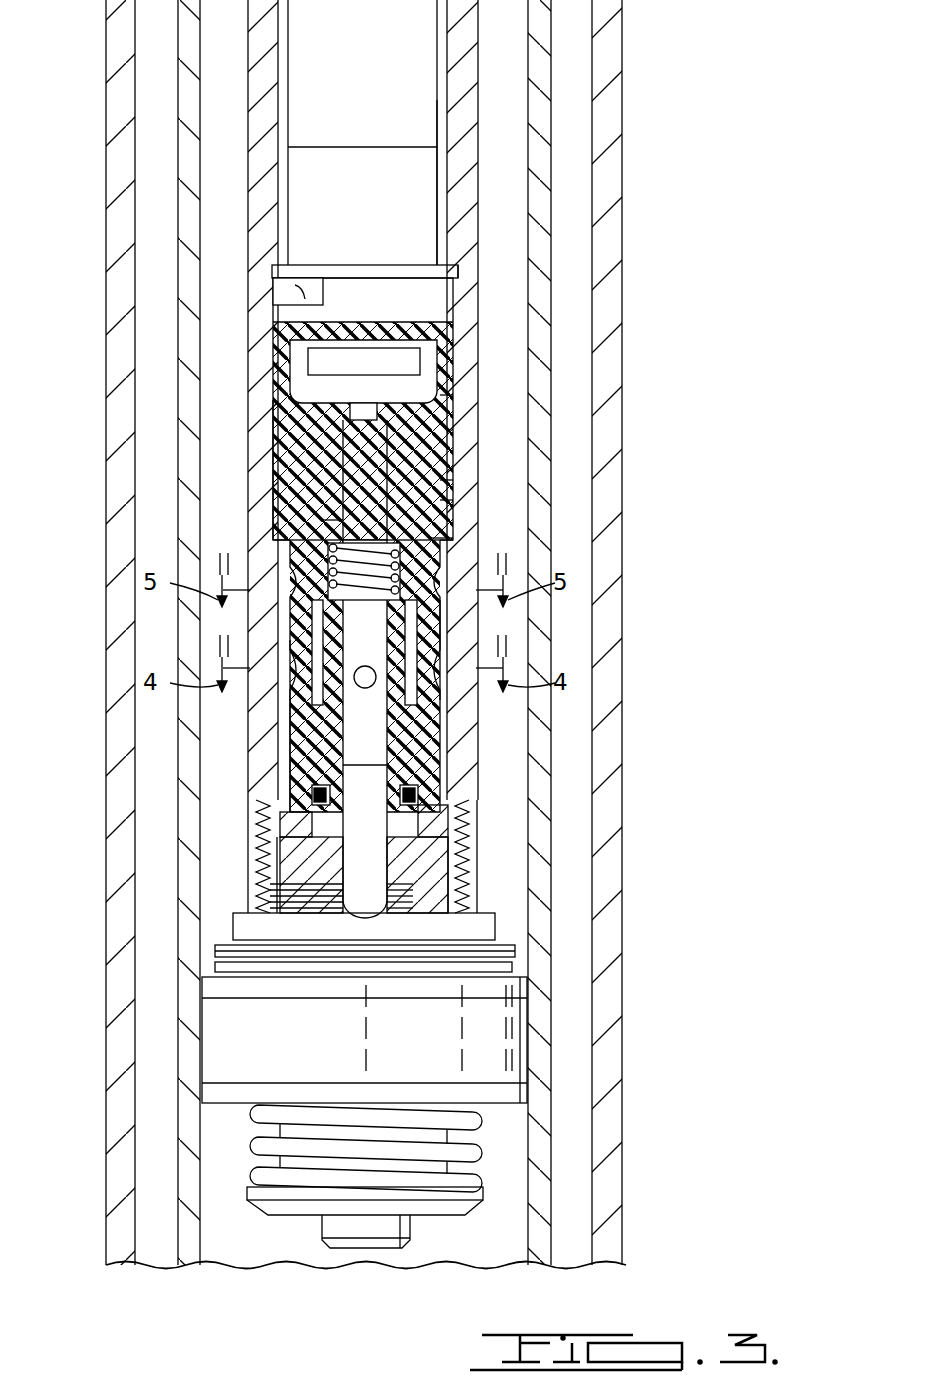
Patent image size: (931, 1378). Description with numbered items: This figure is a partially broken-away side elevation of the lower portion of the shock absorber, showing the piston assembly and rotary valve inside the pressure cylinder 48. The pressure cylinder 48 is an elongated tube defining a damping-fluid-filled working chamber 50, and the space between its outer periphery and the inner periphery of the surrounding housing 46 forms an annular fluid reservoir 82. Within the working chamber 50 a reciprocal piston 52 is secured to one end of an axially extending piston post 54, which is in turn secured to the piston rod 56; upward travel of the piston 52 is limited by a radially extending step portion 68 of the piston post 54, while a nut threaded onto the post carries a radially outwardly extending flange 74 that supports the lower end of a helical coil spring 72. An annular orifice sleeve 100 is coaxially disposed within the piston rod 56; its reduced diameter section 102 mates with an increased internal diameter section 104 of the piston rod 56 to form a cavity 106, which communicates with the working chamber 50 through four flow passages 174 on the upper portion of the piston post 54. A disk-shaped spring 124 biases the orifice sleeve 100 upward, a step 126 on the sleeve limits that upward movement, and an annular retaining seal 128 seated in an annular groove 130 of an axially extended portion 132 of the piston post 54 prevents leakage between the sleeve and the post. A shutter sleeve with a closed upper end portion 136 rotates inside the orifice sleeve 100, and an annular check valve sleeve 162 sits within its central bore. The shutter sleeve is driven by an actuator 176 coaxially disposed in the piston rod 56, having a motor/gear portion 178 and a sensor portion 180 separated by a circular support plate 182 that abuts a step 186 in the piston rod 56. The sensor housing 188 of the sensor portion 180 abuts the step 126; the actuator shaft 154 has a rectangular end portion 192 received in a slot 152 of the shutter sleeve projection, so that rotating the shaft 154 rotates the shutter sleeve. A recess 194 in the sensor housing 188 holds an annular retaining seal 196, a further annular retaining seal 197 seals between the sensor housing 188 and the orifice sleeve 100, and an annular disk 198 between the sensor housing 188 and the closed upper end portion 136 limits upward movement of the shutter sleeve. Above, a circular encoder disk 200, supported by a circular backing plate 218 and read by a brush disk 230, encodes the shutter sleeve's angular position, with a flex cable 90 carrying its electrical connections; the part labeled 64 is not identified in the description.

The housing 46 is at (612, 960).
The pressure cylinder 48 is at (540, 1030).
The working chamber 50 is at (510, 897).
The reciprocal piston 52 is at (513, 1050).
The piston post 54 is at (510, 1121).
The piston rod 56 is at (260, 147).
The end plate 64 is at (237, 925).
The step portion 68 is at (248, 920).
The helical coil spring 72 is at (525, 1172).
The flange 74 is at (485, 1205).
The annular fluid reservoir 82 is at (577, 912).
The flex cable 90 is at (323, 43).
The orifice sleeve 100 is at (435, 700).
The reduced diameter section 102 is at (300, 740).
The increased internal diameter section 104 is at (255, 705).
The cavity 106 is at (275, 625).
The disk-shaped spring 124 is at (438, 832).
The step 126 is at (455, 485).
The annular retaining seal 128 is at (290, 800).
The annular groove 130 is at (412, 782).
The axially extended portion 132 is at (440, 762).
The closed upper end portion 136 is at (330, 550).
The slot 152 is at (355, 435).
The shaft 154 is at (355, 385).
The check valve sleeve 162 is at (392, 724).
The flow passages 174 is at (265, 880).
The actuator 176 is at (448, 108).
The motor/gear portion 178 is at (420, 183).
The sensor portion 180 is at (432, 355).
The circular support plate 182 is at (340, 265).
The step 186 is at (455, 278).
The sensor housing 188 is at (275, 440).
The rectangular end portion 192 is at (453, 402).
The recess 194 is at (442, 505).
The annular retaining seal 196 is at (330, 520).
The annular retaining seal 197 is at (617, 350).
The annular disk 198 is at (445, 540).
The encoder disk 200 is at (305, 345).
The circular backing plate 218 is at (272, 298).
The brush disk 230 is at (395, 365).